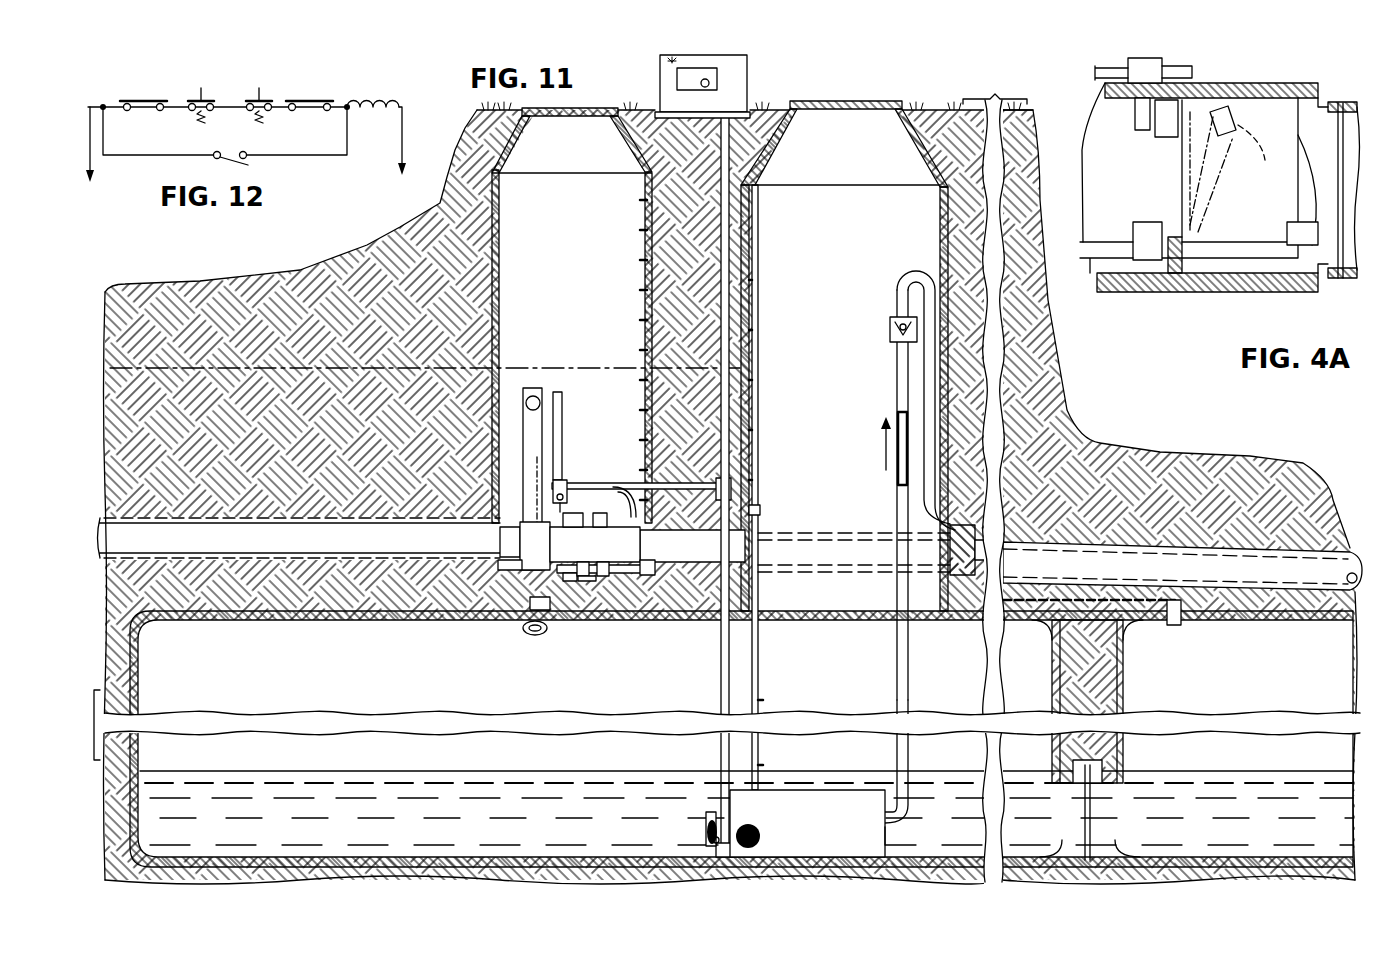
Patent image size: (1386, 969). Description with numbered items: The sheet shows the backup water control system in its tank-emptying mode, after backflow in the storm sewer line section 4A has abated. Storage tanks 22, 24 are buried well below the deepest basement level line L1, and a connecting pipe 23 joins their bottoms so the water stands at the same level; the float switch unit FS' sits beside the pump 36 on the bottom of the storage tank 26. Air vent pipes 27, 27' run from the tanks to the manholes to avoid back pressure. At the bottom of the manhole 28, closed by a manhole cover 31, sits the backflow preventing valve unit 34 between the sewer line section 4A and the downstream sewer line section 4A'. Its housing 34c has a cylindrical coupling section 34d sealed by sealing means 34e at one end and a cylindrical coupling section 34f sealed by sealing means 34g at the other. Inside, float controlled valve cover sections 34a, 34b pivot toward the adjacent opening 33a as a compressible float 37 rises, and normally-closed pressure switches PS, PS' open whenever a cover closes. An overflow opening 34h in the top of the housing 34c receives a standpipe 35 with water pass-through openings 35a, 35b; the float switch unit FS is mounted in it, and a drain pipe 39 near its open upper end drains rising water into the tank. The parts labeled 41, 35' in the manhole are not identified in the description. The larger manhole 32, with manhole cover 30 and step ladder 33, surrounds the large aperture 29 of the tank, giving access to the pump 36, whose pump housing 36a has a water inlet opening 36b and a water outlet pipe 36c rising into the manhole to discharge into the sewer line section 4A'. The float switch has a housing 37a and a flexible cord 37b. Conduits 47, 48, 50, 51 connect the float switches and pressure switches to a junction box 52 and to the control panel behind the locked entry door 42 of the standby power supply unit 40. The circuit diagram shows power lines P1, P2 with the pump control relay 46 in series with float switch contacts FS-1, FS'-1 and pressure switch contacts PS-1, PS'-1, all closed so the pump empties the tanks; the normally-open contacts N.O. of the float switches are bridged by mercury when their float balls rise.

In FIG. 11, the basement level line L1 is at (182, 290).
In FIG. 11, the manhole 28 is at (492, 300).
In FIG. 11, the storage tank 26 is at (645, 203).
In FIG. 11, the manhole cover 31 is at (558, 107).
In FIG. 11, the conduit 47 is at (750, 218).
In FIG. 11, the step ladder 33 is at (759, 248).
In FIG. 11, the manhole 32 is at (950, 245).
In FIG. 11, the manhole cover 30 is at (872, 103).
In FIG. 11, the storm sewer line section 4A is at (299, 552).
In FIG. 11, the sewer line section 4A' is at (1001, 597).
In FIG. 11, the float switch housing 41 is at (545, 405).
In FIG. 11, the float rod 35' is at (492, 428).
In FIG. 11, the water overflow opening 34h is at (537, 470).
In FIG. 11, the junction box 52 is at (759, 478).
In FIG. 11, the conduit 48 is at (759, 463).
In FIG. 11, the conduit 51 is at (761, 512).
In FIG. 4A, the conduit 51 is at (1180, 78).
In FIG. 11, the water pass-through opening 35b is at (518, 558).
In FIG. 11, the sealing means 34e is at (538, 530).
In FIG. 11, the backflow preventing valve unit 34 is at (605, 575).
In FIG. 4A, the backflow preventing valve unit 34 is at (1245, 292).
In FIG. 11, the valve cover section 34a is at (545, 500).
In FIG. 4A, the valve cover section 34a is at (1248, 242).
In FIG. 11, the valve cover section 34b is at (583, 578).
In FIG. 4A, the valve cover section 34b is at (1098, 241).
In FIG. 11, the housing 34c is at (612, 578).
In FIG. 4A, the housing 34c is at (1163, 292).
In FIG. 11, the cylindrical coupling section 34f is at (652, 576).
In FIG. 4A, the cylindrical coupling section 34f is at (1350, 280).
In FIG. 11, the water pass-through opening 35a is at (515, 567).
In FIG. 11, the cylindrical coupling section 34d is at (530, 610).
In FIG. 11, the drain pipe 39 is at (523, 630).
In FIG. 11, the air vent pipe 27 is at (601, 638).
In FIG. 11, the float switch unit FS is at (573, 462).
In FIG. 11, the normally open contact N.O. is at (562, 480).
In FIG. 11, the pressure switch PS is at (582, 494).
In FIG. 11, the pressure switch PS' is at (617, 487).
In FIG. 4A, the pressure switch PS' is at (1137, 130).
In FIG. 11, the sealing means 34g is at (759, 540).
In FIG. 4A, the sealing means 34g is at (1362, 106).
In FIG. 11, the conduit 50 is at (720, 742).
In FIG. 11, the locked entry door 42 is at (662, 77).
In FIG. 11, the standby power supply unit 40 is at (748, 70).
In FIG. 11, the large aperture 29 is at (912, 600).
In FIG. 11, the water outlet pipe 36c is at (912, 785).
In FIG. 11, the compressible float 37 is at (888, 330).
In FIG. 4A, the compressible float 37 is at (1258, 136).
In FIG. 11, the storage tank 22 is at (386, 759).
In FIG. 11, the storage tank 24 is at (1210, 764).
In FIG. 11, the pump 36 is at (855, 790).
In FIG. 11, the water inlet opening 36b is at (752, 822).
In FIG. 11, the pump housing 36a is at (887, 835).
In FIG. 11, the flexible cord 37b is at (716, 820).
In FIG. 11, the float switch housing 37a is at (708, 830).
In FIG. 11, the float switch unit FS' is at (669, 826).
In FIG. 11, the air vent pipe 27' is at (1092, 691).
In FIG. 11, the connecting pipe 23 is at (1100, 848).
In FIG. 12, the float switch contacts FS-1 is at (150, 95).
In FIG. 12, the pressure switch contacts PS-1 is at (218, 76).
In FIG. 12, the pressure switch contacts PS'-1 is at (264, 94).
In FIG. 12, the float switch contacts FS'-1 is at (317, 88).
In FIG. 12, the pump control relay 46 is at (392, 100).
In FIG. 12, the power line P1 is at (95, 172).
In FIG. 12, the power line P2 is at (396, 167).
In FIG. 4A, the opening 33a is at (1177, 228).
In FIG. 4A, the standpipe 35 is at (1191, 279).